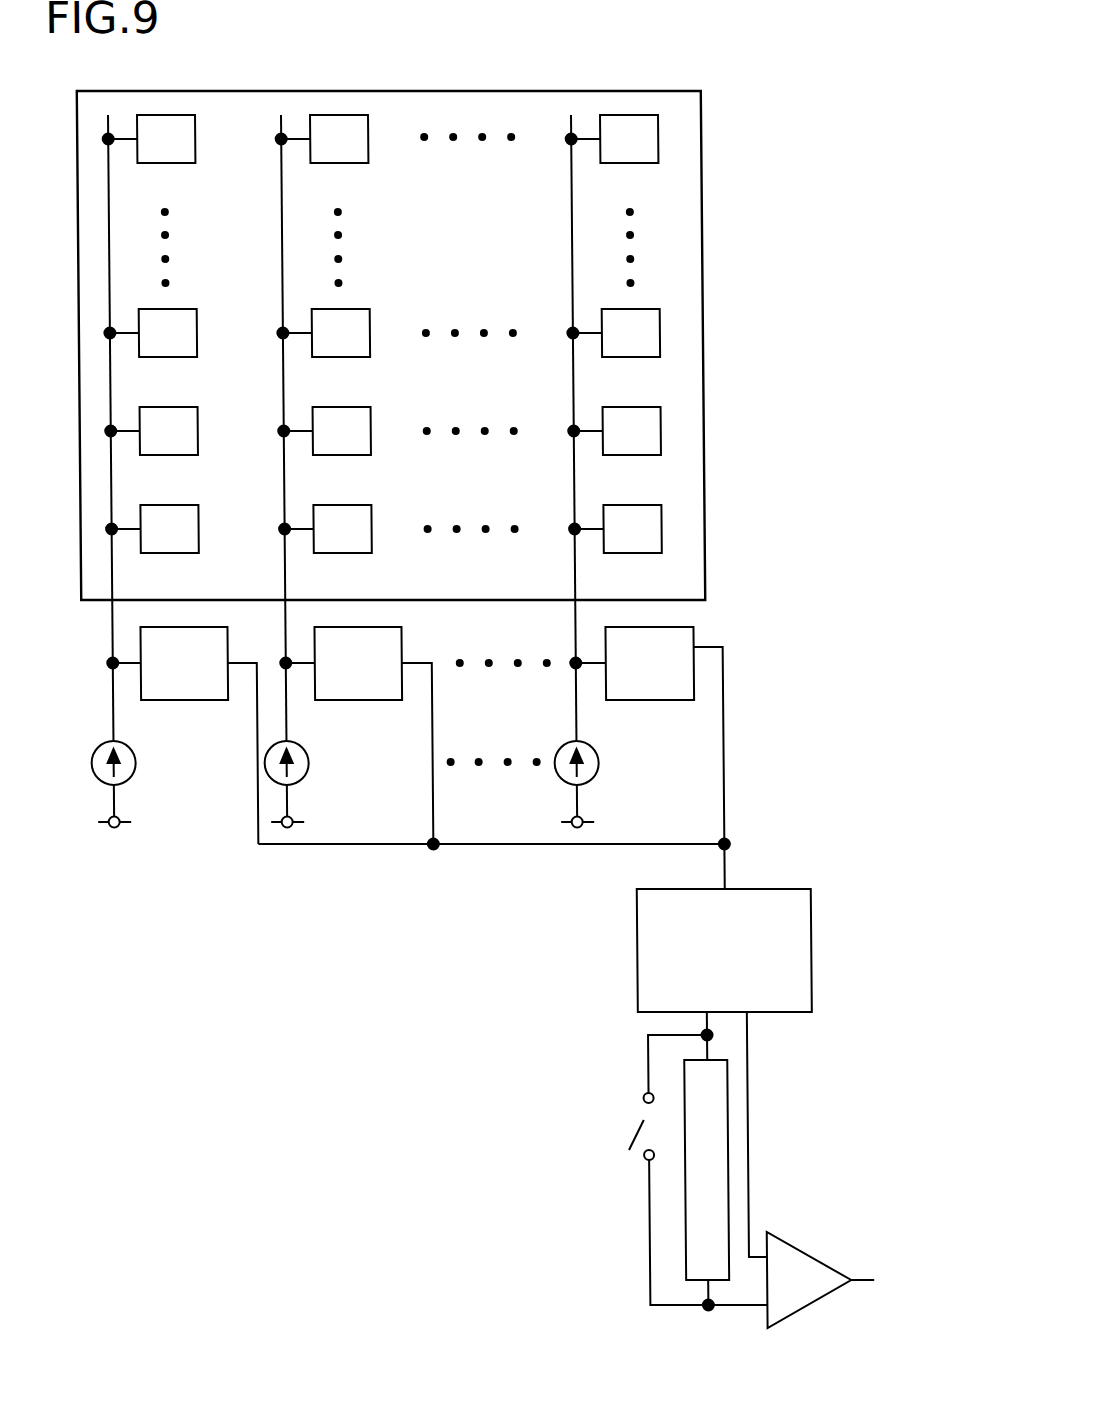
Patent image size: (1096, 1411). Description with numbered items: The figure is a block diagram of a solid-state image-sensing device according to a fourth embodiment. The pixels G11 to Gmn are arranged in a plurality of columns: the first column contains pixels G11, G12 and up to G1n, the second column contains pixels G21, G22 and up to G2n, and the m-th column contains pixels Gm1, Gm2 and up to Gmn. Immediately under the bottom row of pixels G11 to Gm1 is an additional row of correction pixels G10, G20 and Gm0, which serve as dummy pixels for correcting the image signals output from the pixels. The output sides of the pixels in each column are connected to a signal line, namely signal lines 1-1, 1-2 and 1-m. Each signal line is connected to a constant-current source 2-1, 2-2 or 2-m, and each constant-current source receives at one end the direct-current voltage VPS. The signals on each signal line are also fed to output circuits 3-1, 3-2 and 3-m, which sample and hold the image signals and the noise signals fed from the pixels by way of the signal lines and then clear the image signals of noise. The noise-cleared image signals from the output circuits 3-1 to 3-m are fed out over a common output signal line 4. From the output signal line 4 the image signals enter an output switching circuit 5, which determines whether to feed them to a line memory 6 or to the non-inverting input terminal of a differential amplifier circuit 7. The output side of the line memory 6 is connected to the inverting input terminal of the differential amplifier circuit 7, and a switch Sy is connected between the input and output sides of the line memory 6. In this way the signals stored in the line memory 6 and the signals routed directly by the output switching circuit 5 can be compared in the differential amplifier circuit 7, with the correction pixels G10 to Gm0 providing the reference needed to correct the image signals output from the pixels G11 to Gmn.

The pixel G1n is at (167, 163).
The pixel G12 is at (167, 357).
The pixel G11 is at (167, 455).
The correction pixel G10 is at (167, 553).
The pixel G2n is at (340, 163).
The pixel G22 is at (340, 357).
The pixel G21 is at (340, 455).
The correction pixel G20 is at (340, 553).
The pixel Gmn is at (630, 163).
The pixel Gm2 is at (630, 357).
The pixel Gm1 is at (630, 455).
The correction pixel Gm0 is at (630, 553).
The signal line 1-1 is at (107, 733).
The signal line 1-2 is at (280, 733).
The signal line 1-m is at (570, 733).
The constant-current source 2-1 is at (126, 768).
The constant-current source 2-2 is at (299, 768).
The constant-current source 2-m is at (589, 768).
The output circuit 3-1 is at (179, 700).
The output circuit 3-2 is at (353, 700).
The output circuit 3-m is at (644, 700).
The direct-current voltage VPS is at (373, 822).
The output signal line 4 is at (720, 862).
The output switching circuit 5 is at (629, 950).
The line memory 6 is at (718, 1170).
The switch Sy is at (677, 1170).
The differential amplifier circuit 7 is at (798, 1250).